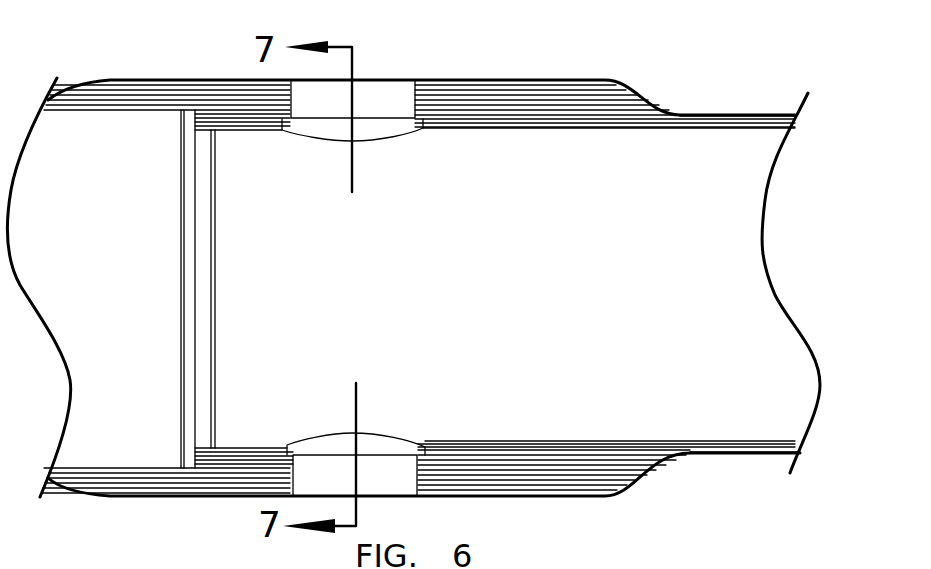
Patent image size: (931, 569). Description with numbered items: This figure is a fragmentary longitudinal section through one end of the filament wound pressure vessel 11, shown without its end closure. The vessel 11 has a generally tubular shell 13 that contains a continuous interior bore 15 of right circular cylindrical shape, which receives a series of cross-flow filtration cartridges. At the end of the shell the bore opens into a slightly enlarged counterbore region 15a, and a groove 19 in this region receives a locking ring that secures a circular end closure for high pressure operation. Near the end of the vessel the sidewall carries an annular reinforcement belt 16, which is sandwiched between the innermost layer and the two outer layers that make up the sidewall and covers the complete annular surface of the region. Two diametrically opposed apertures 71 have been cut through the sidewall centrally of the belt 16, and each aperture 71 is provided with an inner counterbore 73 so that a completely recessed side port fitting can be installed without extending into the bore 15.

The vessel 11 is at (658, 70).
The tubular shell 13 is at (712, 115).
The interior bore 15 is at (627, 261).
The counterbore region 15a is at (137, 112).
The reinforcement belt 16 is at (490, 95).
The groove 19 is at (181, 229).
The aperture 71 is at (290, 100).
The inner counterbore 73 is at (287, 125).